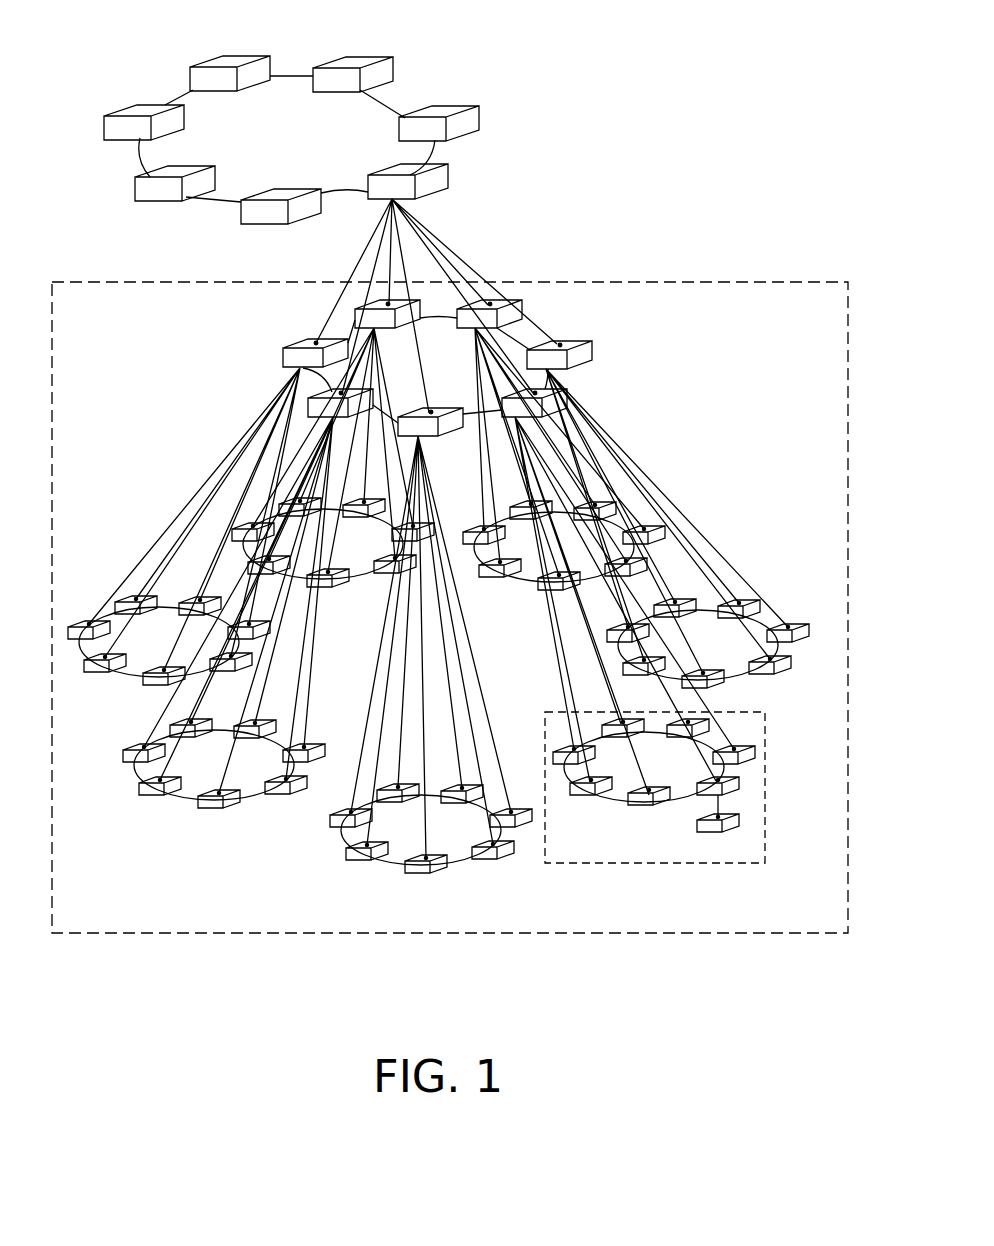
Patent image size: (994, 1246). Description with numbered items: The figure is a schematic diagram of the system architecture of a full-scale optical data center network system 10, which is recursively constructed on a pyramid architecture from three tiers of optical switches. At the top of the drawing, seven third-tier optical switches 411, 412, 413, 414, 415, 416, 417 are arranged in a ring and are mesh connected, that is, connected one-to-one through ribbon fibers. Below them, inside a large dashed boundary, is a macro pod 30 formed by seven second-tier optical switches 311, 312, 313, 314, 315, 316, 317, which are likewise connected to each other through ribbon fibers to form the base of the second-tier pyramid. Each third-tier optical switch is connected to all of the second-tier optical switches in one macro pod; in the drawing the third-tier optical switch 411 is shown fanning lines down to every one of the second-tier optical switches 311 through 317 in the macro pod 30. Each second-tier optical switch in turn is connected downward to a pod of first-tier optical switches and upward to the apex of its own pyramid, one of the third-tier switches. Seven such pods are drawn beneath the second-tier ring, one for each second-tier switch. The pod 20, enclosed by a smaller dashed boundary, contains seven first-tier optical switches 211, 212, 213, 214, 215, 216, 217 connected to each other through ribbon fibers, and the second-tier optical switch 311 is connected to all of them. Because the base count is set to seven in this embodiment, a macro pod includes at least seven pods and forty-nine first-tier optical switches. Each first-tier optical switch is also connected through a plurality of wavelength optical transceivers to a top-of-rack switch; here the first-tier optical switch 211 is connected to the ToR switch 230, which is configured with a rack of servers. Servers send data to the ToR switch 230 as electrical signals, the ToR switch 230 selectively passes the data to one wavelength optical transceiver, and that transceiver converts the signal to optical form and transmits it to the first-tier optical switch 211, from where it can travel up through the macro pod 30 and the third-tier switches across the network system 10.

The optical data center network system 10 is at (848, 1027).
The pod 20 is at (662, 793).
The macro pod 30 is at (823, 348).
The tier-1 optical switch 211 is at (735, 783).
The tier-1 optical switch 212 is at (745, 757).
The tier-1 optical switch 213 is at (690, 730).
The tier-1 optical switch 214 is at (630, 730).
The tier-1 optical switch 215 is at (560, 757).
The tier-1 optical switch 216 is at (590, 795).
The tier-1 optical switch 217 is at (660, 808).
The ToR switch 230 is at (740, 820).
The tier-2 optical switch 311 is at (575, 397).
The tier-2 optical switch 312 is at (580, 357).
The tier-2 optical switch 313 is at (510, 318).
The tier-2 optical switch 314 is at (370, 315).
The tier-2 optical switch 315 is at (290, 360).
The tier-2 optical switch 316 is at (318, 406).
The tier-2 optical switch 317 is at (430, 415).
The tier-3 optical switch 411 is at (432, 188).
The tier-3 optical switch 412 is at (462, 128).
The tier-3 optical switch 413 is at (368, 62).
The tier-3 optical switch 414 is at (200, 80).
The tier-3 optical switch 415 is at (130, 110).
The tier-3 optical switch 416 is at (145, 190).
The tier-3 optical switch 417 is at (262, 222).